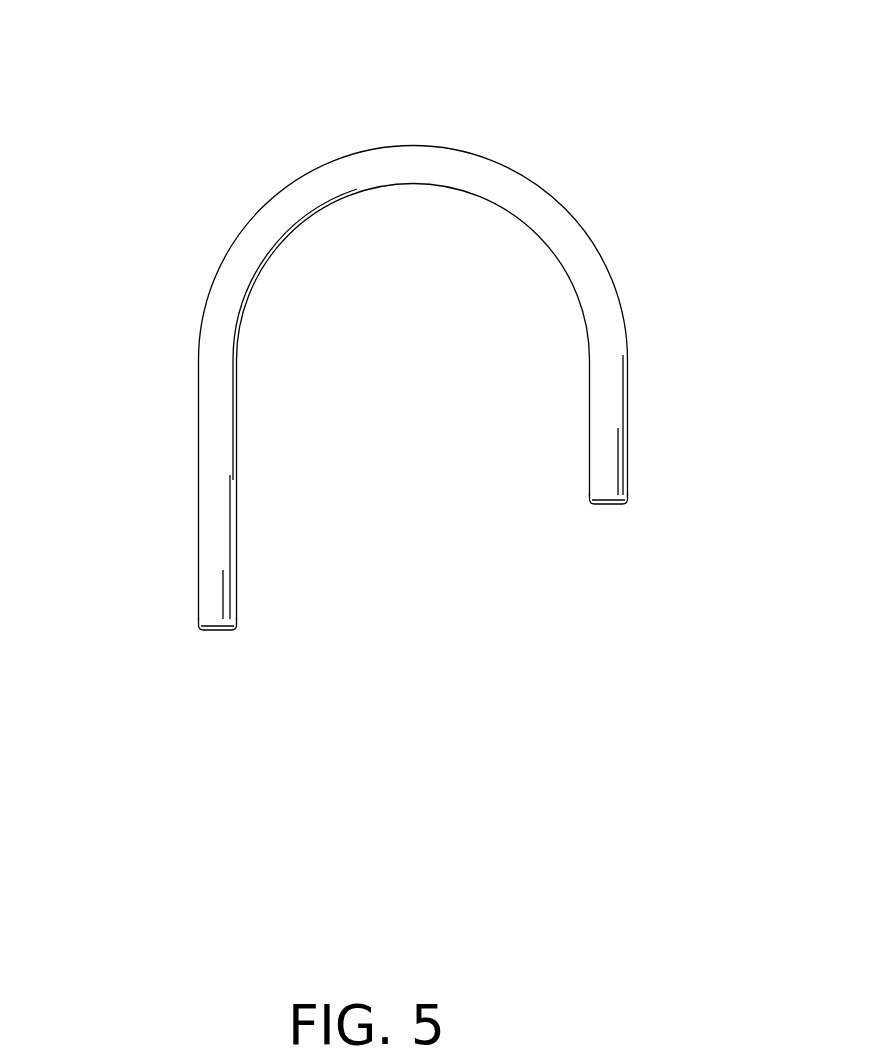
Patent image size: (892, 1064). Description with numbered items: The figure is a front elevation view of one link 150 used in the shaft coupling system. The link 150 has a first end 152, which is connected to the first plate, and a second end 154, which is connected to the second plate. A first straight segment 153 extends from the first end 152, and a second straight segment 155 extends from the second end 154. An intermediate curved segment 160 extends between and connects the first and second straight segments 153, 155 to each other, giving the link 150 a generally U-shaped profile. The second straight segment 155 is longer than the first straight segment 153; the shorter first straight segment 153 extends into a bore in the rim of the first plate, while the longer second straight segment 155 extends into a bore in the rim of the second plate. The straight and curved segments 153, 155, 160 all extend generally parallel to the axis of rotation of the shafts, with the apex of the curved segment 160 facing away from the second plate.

The link 150 is at (315, 116).
The intermediate curved segment 160 is at (467, 172).
The second straight segment 155 is at (211, 511).
The second end 154 is at (182, 611).
The first straight segment 153 is at (610, 408).
The first end 152 is at (665, 493).